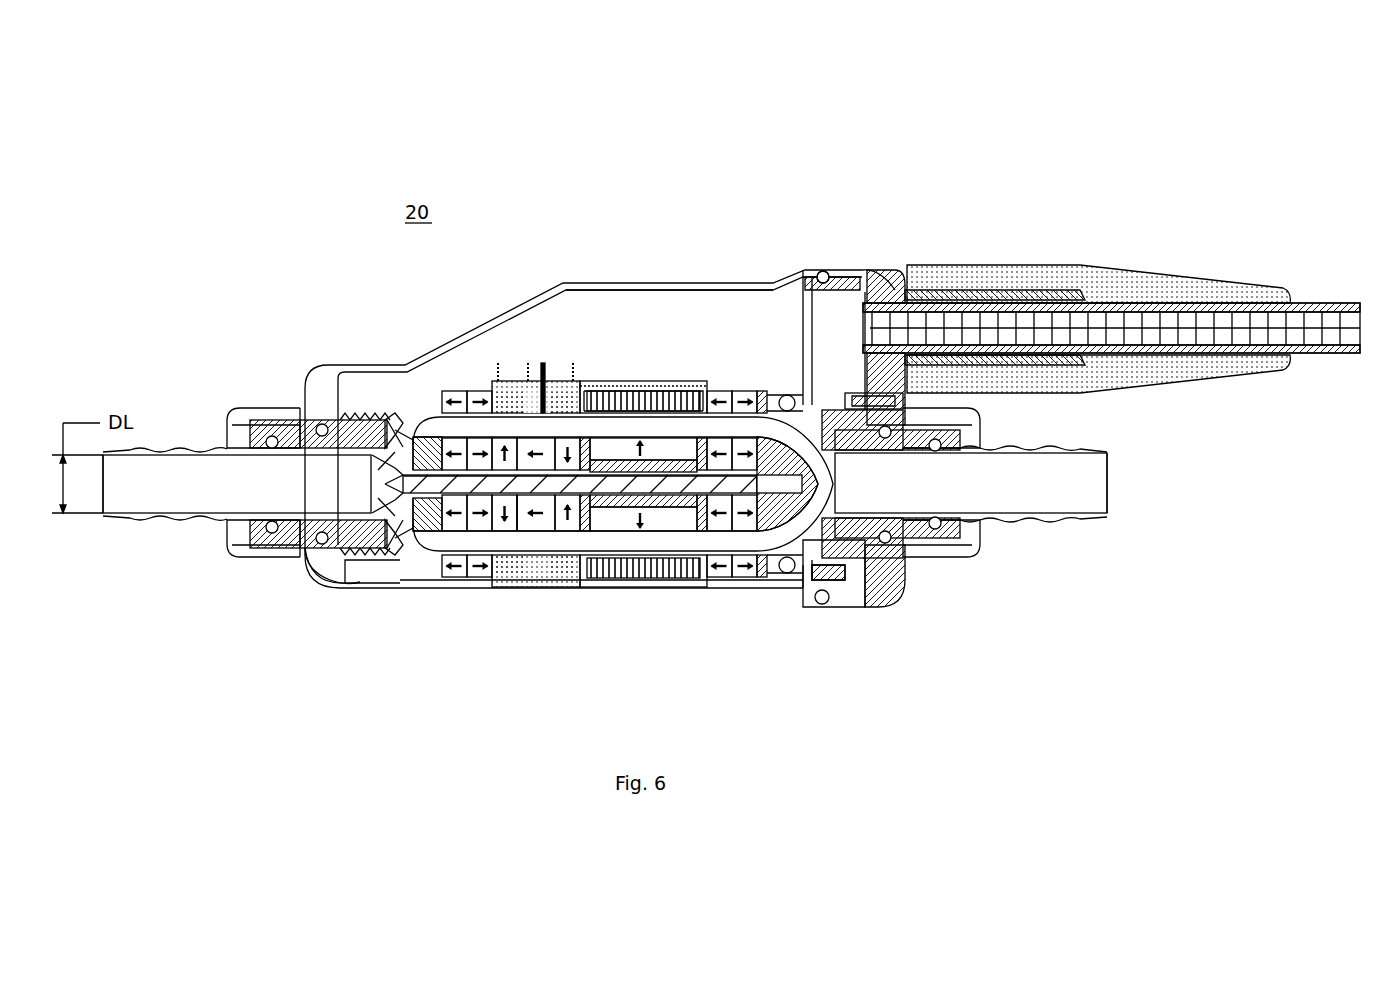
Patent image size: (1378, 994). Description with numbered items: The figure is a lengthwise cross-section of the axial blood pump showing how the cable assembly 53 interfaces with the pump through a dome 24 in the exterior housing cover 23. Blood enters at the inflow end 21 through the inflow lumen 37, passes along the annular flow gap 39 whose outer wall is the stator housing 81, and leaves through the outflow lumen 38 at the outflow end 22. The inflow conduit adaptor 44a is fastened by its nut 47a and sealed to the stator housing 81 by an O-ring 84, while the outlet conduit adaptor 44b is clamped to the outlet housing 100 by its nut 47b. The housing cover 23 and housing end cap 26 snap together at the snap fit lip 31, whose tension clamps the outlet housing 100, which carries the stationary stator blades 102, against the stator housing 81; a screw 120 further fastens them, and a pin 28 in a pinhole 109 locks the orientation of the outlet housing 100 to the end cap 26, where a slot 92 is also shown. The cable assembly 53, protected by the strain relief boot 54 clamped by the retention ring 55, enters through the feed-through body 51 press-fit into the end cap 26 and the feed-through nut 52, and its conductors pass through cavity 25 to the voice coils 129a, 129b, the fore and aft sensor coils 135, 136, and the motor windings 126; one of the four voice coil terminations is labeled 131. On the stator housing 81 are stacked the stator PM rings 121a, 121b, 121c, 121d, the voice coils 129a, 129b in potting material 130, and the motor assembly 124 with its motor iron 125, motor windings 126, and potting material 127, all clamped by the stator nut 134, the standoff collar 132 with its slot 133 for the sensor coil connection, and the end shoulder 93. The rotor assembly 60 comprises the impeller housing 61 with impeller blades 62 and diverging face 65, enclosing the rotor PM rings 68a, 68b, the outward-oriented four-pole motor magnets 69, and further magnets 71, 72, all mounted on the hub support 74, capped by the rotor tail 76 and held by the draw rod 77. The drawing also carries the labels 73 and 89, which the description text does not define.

The inflow end 21 is at (164, 540).
The outflow end 22 is at (1112, 522).
The exterior housing cover 23 is at (325, 383).
The dome 24 is at (688, 283).
The cavity 25 is at (698, 312).
The housing end cap 26 is at (872, 275).
The pin 28 is at (905, 401).
The snap fit lip 31 is at (848, 280).
The inflow lumen 37 is at (168, 488).
The outflow lumen 38 is at (1068, 487).
The annular flow gap 39 is at (537, 562).
The inflow conduit adaptor 44a is at (198, 446).
The outlet conduit adaptor 44b is at (985, 524).
The adaptor nut 47a is at (248, 410).
The adaptor nut 47b is at (980, 556).
The feed-through body 51 is at (920, 290).
The feed-through nut 52 is at (955, 287).
The cable assembly 53 is at (1290, 330).
The strain relief boot 54 is at (1110, 283).
The retention ring 55 is at (1060, 265).
The rotor assembly 60 is at (498, 522).
The impeller housing 61 is at (432, 522).
The impeller blades 62 is at (405, 562).
The impeller diverging face 65 is at (403, 527).
The rotor PM ring 68a is at (452, 562).
The rotor PM ring 68b is at (470, 522).
The motor magnets 69 is at (672, 452).
The permanent magnet 71 is at (575, 526).
The permanent magnet 72 is at (506, 562).
The lower pole 73 is at (540, 522).
The hub support 74 is at (612, 484).
The rotor tail 76 is at (770, 532).
The draw rod 77 is at (585, 489).
The stator housing 81 is at (422, 440).
The O-ring 84 is at (277, 435).
The retainer 89 is at (403, 545).
The slot 92 is at (823, 270).
The end shoulder 93 is at (752, 391).
The outlet housing 100 is at (872, 556).
The stator blades 102 is at (800, 590).
The pinhole 109 is at (875, 408).
The screw 120 is at (845, 572).
The stator PM ring 121a is at (460, 391).
The stator PM ring 121b is at (478, 391).
The stator PM ring 121c is at (722, 391).
The stator PM ring 121d is at (738, 391).
The motor assembly 124 is at (632, 381).
The motor iron 125 is at (618, 381).
The motor windings 126 is at (627, 381).
The potting material 127 is at (603, 381).
The voice coil 129a is at (515, 381).
The voice coil 129b is at (560, 381).
The potting material 130 is at (545, 363).
The voice coil termination 131 is at (527, 363).
The standoff collar 132 is at (405, 546).
The slot 133 is at (418, 440).
The stator nut 134 is at (362, 415).
The fore position sensor coil 135 is at (408, 440).
The aft position sensor coil 136 is at (788, 395).